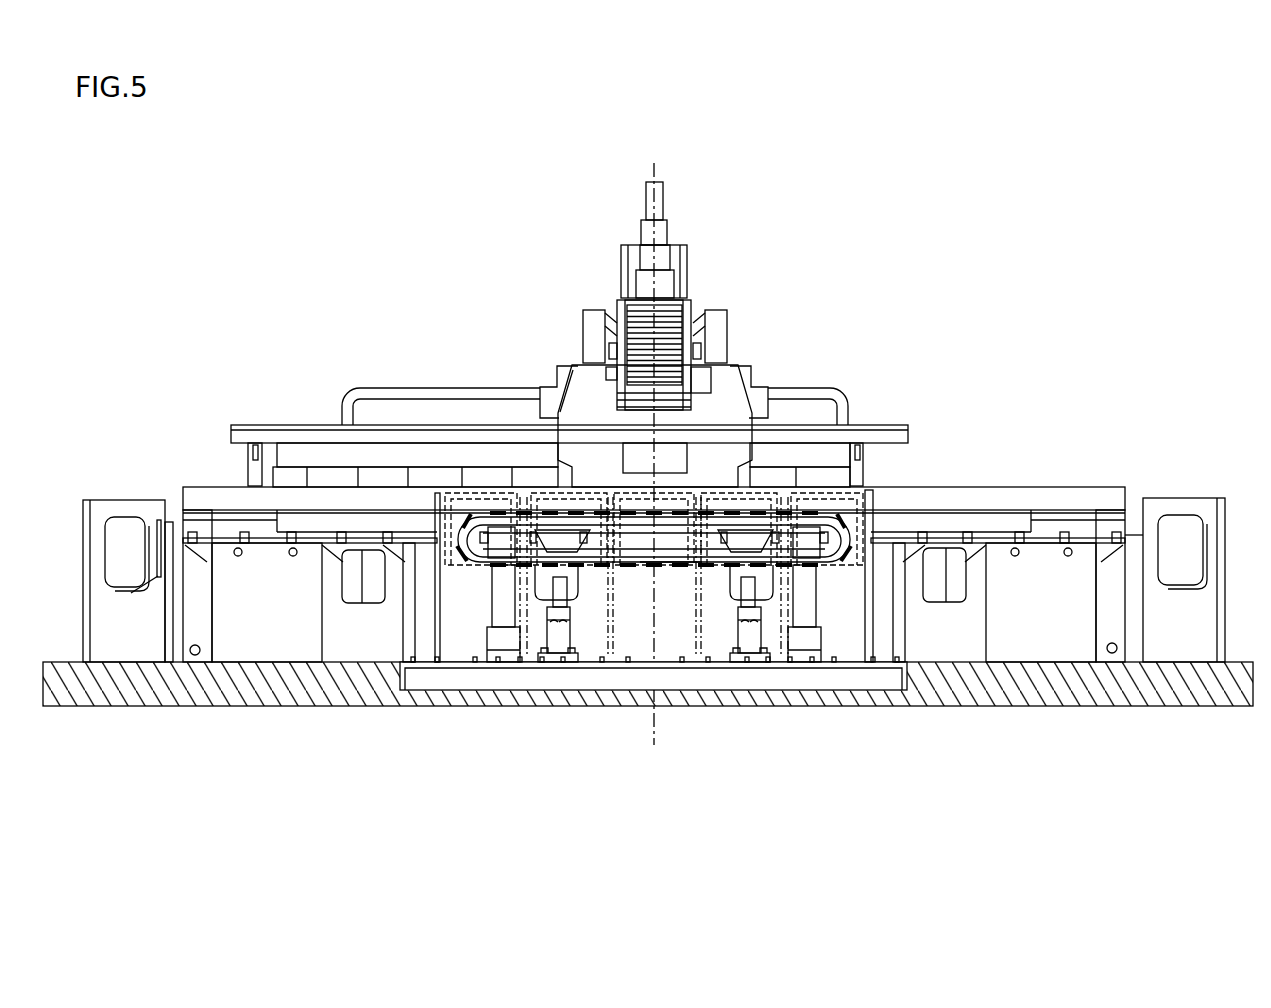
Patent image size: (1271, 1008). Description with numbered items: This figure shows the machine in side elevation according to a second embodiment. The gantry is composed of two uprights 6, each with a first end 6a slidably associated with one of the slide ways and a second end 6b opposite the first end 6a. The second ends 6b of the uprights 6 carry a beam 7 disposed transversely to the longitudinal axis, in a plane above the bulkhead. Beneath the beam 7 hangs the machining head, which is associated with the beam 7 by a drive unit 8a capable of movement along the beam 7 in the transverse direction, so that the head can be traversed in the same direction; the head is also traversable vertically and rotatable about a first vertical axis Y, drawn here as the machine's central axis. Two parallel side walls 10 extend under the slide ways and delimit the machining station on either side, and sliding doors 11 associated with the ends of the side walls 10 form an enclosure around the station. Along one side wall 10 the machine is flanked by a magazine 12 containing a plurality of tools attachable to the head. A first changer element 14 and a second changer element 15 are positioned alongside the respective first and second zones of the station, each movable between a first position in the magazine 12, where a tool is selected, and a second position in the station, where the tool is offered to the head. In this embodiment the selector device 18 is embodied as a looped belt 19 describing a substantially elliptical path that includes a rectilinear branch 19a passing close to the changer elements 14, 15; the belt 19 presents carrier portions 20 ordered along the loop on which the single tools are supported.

The upright 6 is at (745, 388).
The first end 6a is at (695, 463).
The second end 6b is at (715, 343).
The beam 7 is at (637, 330).
The drive unit 8a is at (690, 282).
The side wall 10 is at (255, 617).
The sliding doors 11 is at (122, 500).
The magazine 12 is at (874, 618).
The first changer element 14 is at (547, 612).
The second changer element 15 is at (758, 612).
The selector device 18 is at (485, 565).
The looped belt 19 is at (470, 530).
The rectilinear branch 19a is at (677, 568).
The carrier portions 20 is at (505, 513).
The first vertical axis Y is at (653, 722).